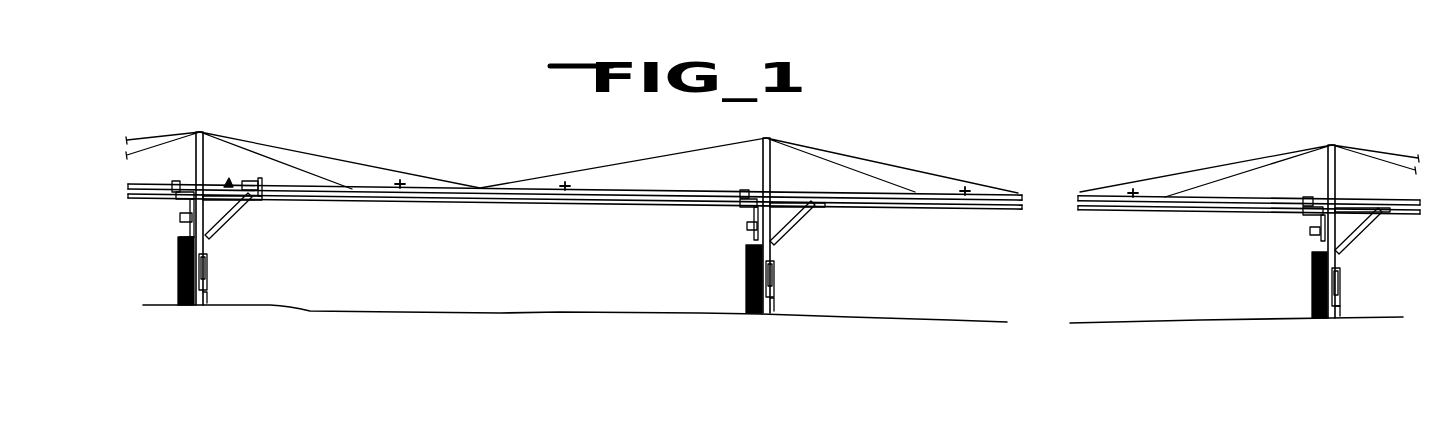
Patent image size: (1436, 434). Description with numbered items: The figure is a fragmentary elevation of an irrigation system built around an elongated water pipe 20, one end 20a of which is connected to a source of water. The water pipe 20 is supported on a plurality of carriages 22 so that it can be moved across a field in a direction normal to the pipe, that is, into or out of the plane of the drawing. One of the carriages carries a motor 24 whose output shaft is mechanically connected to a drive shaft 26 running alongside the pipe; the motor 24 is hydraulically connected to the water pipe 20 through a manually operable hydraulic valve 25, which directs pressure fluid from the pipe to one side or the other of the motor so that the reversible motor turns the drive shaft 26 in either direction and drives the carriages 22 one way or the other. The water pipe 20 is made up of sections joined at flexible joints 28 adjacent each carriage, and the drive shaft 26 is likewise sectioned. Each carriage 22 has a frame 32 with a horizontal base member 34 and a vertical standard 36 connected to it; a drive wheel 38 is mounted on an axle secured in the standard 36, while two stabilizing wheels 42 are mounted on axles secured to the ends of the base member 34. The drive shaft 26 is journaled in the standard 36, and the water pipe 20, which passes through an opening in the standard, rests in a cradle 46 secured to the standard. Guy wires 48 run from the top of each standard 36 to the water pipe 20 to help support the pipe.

The water pipe 20 is at (1082, 190).
The end of water pipe 20a is at (148, 188).
The carriage 22 is at (244, 245).
The motor 24 is at (252, 180).
The hydraulic valve 25 is at (226, 183).
The drive shaft 26 is at (533, 203).
The flexible joint 28 is at (176, 181).
The frame 32 is at (216, 222).
The horizontal base member 34 is at (207, 286).
The vertical standard 36 is at (199, 133).
The drive wheel 38 is at (178, 263).
The stabilizing wheel 42 is at (207, 299).
The cradle 46 is at (256, 200).
The guy wire 48 is at (332, 179).